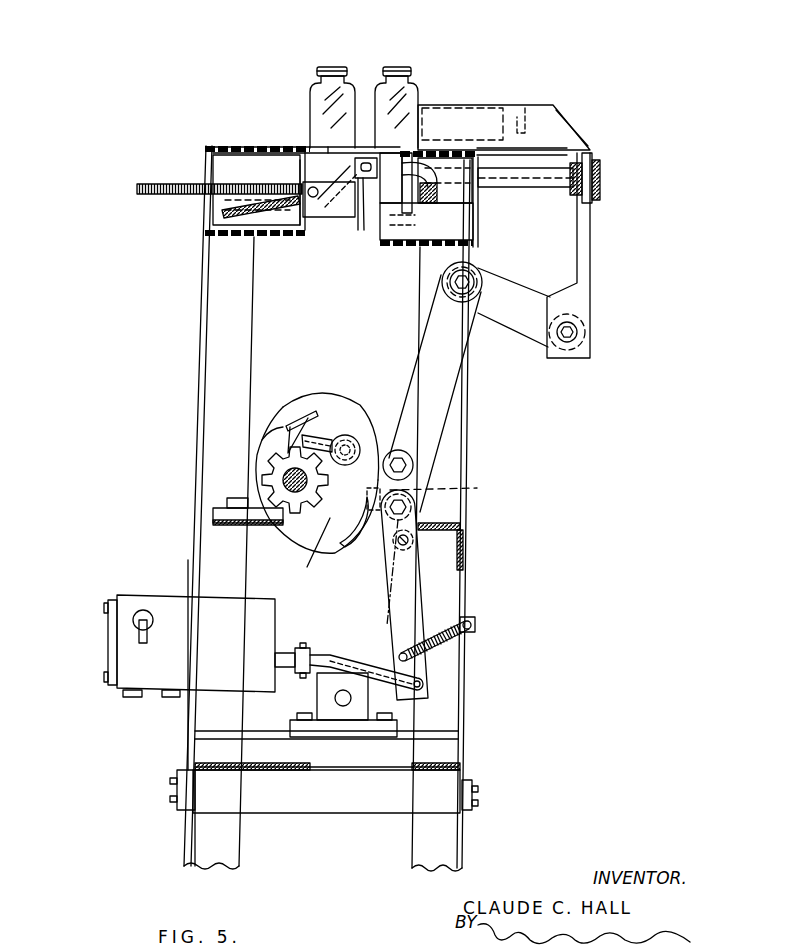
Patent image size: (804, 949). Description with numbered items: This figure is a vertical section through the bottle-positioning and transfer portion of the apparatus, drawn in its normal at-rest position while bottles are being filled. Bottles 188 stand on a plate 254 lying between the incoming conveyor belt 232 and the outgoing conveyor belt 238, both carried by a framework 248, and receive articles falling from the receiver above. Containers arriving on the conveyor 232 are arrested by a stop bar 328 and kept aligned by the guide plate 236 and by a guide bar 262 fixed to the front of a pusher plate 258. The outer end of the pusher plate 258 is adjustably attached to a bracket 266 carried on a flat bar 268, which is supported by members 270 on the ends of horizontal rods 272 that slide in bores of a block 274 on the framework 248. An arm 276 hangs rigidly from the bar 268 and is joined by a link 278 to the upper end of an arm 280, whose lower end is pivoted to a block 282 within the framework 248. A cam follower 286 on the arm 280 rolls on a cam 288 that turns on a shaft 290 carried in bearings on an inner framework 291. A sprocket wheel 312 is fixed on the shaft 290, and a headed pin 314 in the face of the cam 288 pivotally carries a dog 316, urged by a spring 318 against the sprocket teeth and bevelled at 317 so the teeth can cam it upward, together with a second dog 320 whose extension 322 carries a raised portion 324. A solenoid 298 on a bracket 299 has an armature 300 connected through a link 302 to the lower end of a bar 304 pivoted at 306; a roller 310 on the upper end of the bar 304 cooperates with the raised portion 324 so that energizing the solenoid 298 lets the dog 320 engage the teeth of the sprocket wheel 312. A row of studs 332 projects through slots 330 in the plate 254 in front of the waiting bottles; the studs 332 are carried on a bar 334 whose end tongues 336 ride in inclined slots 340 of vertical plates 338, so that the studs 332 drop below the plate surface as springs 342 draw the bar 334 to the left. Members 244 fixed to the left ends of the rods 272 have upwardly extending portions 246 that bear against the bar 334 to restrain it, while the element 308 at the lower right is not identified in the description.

The bottle 188 is at (327, 67).
The guide plate 236 is at (422, 10).
The conveyor belt 232 is at (448, 150).
The conveyor belt 238 is at (230, 145).
The member 244 is at (429, 202).
The upwardly extending portion 246 is at (363, 187).
The framework 248 is at (228, 237).
The plate 254 is at (320, 157).
The pusher plate 258 is at (552, 125).
The guide bar 262 is at (427, 118).
The bracket 266 is at (582, 158).
The flat bar 268 is at (597, 177).
The member 270 is at (597, 197).
The rod 272 is at (523, 182).
The block 274 is at (450, 197).
The arm 276 is at (588, 258).
The link 278 is at (518, 327).
The arm 280 is at (421, 368).
The block 282 is at (323, 698).
The cam follower 286 is at (400, 447).
The cam 288 is at (355, 437).
The shaft 290 is at (272, 453).
The framework 291 is at (255, 530).
The solenoid 298 is at (165, 610).
The bracket 299 is at (182, 720).
The armature 300 is at (295, 652).
The link 302 is at (345, 655).
The bar 304 is at (417, 617).
The pivot 306 is at (403, 537).
The spring 308 is at (470, 642).
The roller 310 is at (447, 500).
The sprocket wheel 312 is at (280, 447).
The headed pin 314 is at (317, 480).
The dog 316 is at (317, 407).
The bevel 317 is at (280, 440).
The spring 318 is at (293, 408).
The second dog 320 is at (323, 433).
The extension 322 is at (325, 545).
The raised portion 324 is at (357, 537).
The stop bar 328 is at (523, 108).
The slot 330 is at (328, 147).
The stud 332 is at (368, 147).
The bar 334 is at (407, 247).
The tongue 336 is at (370, 195).
The vertically positioned plate 338 is at (306, 168).
The slot 340 is at (318, 212).
The spring 342 is at (277, 222).